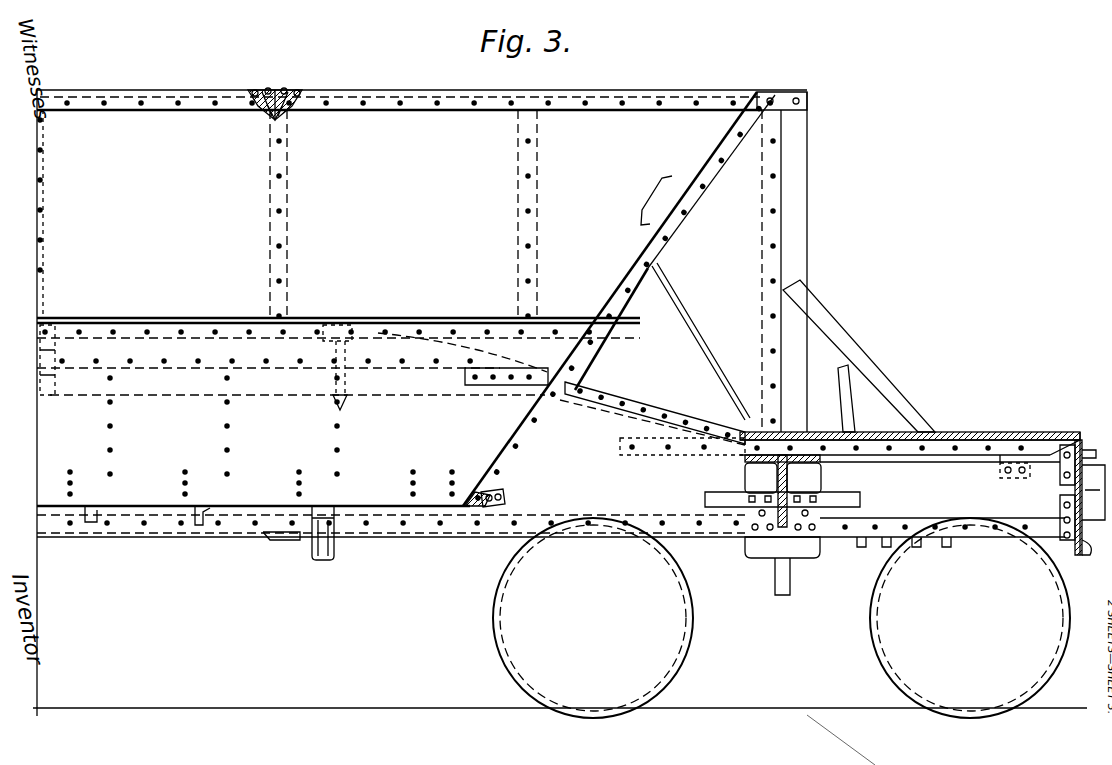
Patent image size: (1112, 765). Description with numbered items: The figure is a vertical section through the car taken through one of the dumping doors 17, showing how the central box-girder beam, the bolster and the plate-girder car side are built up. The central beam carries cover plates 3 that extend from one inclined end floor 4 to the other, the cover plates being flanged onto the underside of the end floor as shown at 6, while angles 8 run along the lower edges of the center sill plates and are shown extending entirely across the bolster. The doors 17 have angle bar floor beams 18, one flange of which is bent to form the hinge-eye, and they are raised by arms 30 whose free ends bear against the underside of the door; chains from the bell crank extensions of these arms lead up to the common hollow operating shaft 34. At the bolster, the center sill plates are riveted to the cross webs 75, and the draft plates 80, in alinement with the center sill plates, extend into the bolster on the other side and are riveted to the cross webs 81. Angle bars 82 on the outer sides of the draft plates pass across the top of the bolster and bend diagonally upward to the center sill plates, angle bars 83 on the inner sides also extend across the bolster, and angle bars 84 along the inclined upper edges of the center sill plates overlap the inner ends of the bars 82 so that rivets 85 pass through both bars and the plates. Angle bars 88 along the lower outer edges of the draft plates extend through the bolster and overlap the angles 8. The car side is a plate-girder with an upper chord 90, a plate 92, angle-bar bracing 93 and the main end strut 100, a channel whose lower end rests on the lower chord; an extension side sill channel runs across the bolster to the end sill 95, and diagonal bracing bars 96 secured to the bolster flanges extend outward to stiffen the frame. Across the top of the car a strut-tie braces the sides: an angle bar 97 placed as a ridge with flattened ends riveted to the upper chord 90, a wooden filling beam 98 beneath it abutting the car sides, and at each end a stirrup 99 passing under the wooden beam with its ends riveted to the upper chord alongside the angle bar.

The cover plates 3 is at (338, 411).
The inclined end floor 4 is at (520, 420).
The flange of cover plates 6 is at (533, 418).
The angles 8 is at (708, 530).
The doors 17 is at (282, 506).
The angle bar floor beams 18 is at (195, 528).
The arms 30 is at (318, 550).
The operating shaft 34 is at (75, 388).
The cross webs 75 is at (766, 492).
The draft plates 80 is at (940, 478).
The cross webs 81 is at (804, 496).
The angle bars 82 is at (1000, 452).
The angle bars 83 is at (672, 450).
The angle bars 84 is at (598, 405).
The rivets 85 is at (668, 412).
The angle bars 88 is at (1008, 523).
The upper chord 90 is at (666, 110).
The plate 92 is at (338, 216).
The angle-bar bracing 93 is at (268, 115).
The end sill 95 is at (1078, 440).
The diagonal bracing bars 96 is at (705, 500).
The angle bar 97 is at (287, 97).
The wooden filling beam 98 is at (300, 113).
The stirrup 99 is at (268, 97).
The main end strut 100 is at (790, 215).